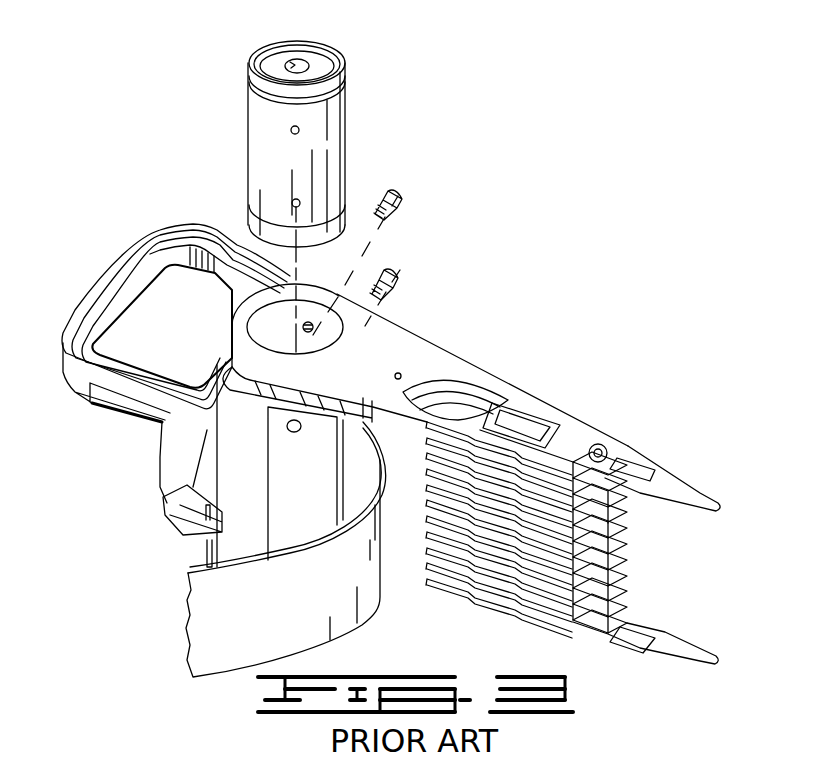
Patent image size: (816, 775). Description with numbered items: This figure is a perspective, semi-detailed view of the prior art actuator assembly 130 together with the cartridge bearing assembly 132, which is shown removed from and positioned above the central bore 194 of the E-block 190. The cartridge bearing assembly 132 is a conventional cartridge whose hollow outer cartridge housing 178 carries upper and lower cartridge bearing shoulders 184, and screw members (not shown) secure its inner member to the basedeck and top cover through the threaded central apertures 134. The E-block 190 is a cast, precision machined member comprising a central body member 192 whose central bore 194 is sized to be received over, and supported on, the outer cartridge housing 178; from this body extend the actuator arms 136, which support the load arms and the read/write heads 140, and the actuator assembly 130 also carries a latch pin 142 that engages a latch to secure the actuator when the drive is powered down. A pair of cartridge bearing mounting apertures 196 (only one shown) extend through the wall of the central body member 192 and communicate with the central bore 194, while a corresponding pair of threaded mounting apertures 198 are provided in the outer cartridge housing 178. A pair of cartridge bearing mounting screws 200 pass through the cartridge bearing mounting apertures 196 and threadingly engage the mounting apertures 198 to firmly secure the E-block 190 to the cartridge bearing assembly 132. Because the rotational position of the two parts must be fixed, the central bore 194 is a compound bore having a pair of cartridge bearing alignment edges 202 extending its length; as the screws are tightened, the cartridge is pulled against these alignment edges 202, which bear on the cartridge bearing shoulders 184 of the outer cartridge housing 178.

The actuator assembly 130 is at (478, 343).
The cartridge bearing assembly 132 is at (378, 90).
The threaded central apertures 134 is at (287, 63).
The actuator arms 136 is at (417, 570).
The read/write heads 140 is at (697, 487).
The latch pin 142 is at (205, 555).
The outer cartridge housing 178 is at (260, 208).
The cartridge bearing shoulders 184 is at (248, 82).
The E-block 190 is at (312, 302).
The central body member 192 is at (367, 338).
The central bore 194 is at (178, 268).
The cartridge bearing mounting apertures 196 is at (308, 327).
The threaded mounting apertures 198 is at (293, 201).
The cartridge bearing mounting screws 200 is at (398, 198).
The cartridge bearing alignment edges 202 is at (262, 332).